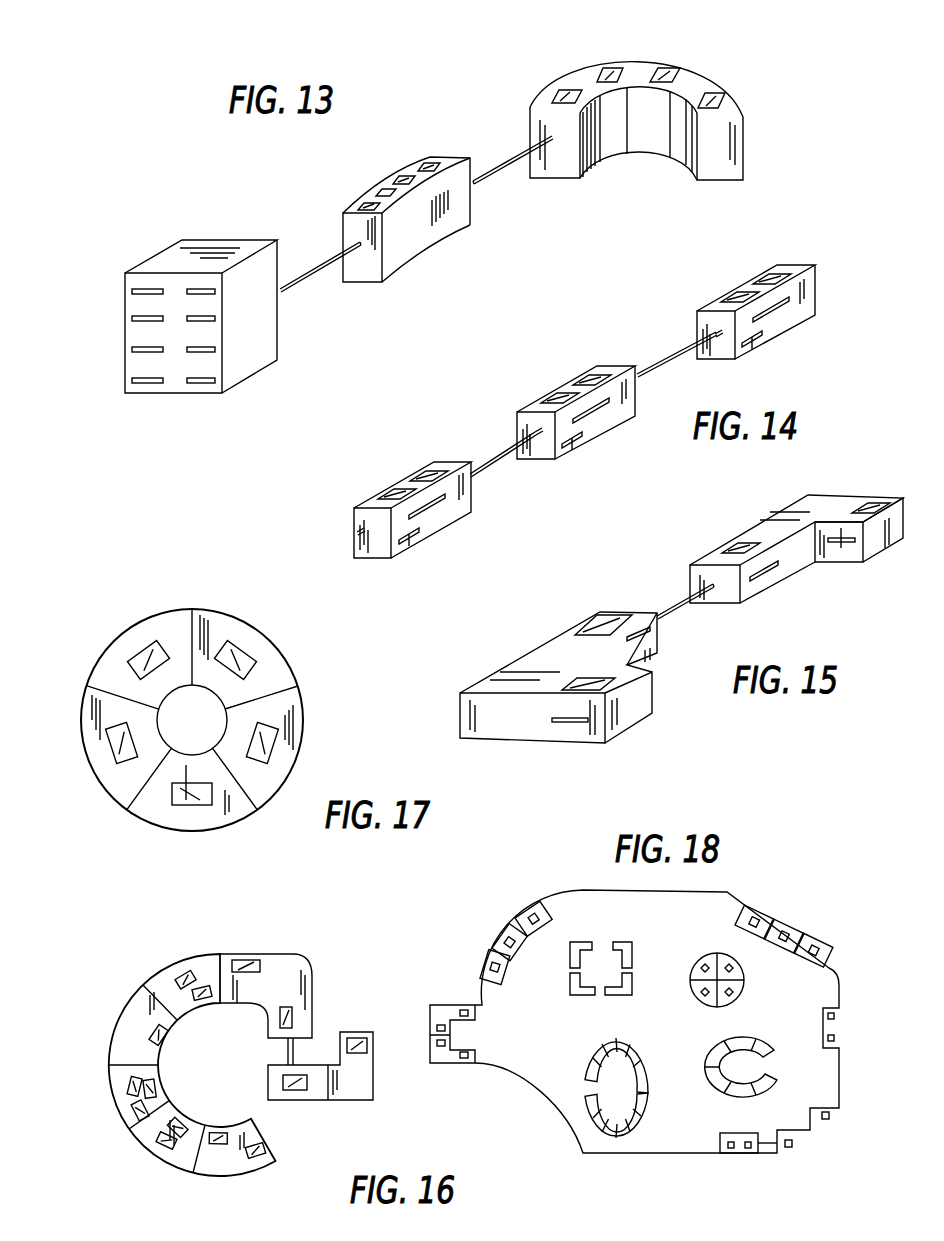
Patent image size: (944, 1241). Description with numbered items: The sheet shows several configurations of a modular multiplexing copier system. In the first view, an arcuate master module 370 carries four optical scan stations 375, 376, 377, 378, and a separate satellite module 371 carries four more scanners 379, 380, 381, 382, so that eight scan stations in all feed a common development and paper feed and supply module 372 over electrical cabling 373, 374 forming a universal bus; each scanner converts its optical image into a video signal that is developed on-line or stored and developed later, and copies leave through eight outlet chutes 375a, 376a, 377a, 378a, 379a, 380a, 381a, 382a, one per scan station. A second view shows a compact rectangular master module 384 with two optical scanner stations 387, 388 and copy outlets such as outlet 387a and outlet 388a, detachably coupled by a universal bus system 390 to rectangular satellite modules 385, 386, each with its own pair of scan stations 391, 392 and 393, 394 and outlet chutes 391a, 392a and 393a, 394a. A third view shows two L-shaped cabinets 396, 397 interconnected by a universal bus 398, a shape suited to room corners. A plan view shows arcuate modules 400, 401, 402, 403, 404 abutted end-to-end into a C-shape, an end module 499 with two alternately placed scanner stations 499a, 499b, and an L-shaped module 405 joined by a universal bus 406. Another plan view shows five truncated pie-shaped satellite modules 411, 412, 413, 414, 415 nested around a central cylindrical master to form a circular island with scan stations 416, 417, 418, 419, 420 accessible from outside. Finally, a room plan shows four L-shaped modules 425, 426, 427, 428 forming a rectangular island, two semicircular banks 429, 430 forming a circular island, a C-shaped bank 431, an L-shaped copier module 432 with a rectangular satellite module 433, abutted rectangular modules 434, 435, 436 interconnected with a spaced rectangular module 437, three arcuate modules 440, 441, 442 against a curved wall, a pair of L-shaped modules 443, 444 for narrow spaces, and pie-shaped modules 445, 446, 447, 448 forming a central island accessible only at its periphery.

In FIG. 13, the master module 370 is at (652, 135).
In FIG. 13, the satellite module 371 is at (368, 177).
In FIG. 13, the common development and paper feed and supply module 372 is at (207, 262).
In FIG. 13, the electrical cabling 373 is at (515, 157).
In FIG. 13, the electrical cabling 374 is at (310, 282).
In FIG. 13, the optical scan station 375 is at (562, 95).
In FIG. 13, the optical scan station 376 is at (612, 76).
In FIG. 13, the optical scan station 377 is at (672, 77).
In FIG. 13, the optical scan station 378 is at (716, 100).
In FIG. 13, the scanner 379 is at (437, 177).
In FIG. 13, the scanner 380 is at (406, 177).
In FIG. 13, the scanner 381 is at (388, 195).
In FIG. 13, the scanner 382 is at (365, 203).
In FIG. 13, the outlet chute 375a is at (130, 381).
In FIG. 13, the outlet chute 376a is at (130, 352).
In FIG. 13, the outlet chute 377a is at (130, 320).
In FIG. 13, the outlet chute 378a is at (136, 290).
In FIG. 13, the outlet chute 379a is at (218, 381).
In FIG. 13, the outlet chute 380a is at (218, 352).
In FIG. 13, the outlet chute 381a is at (247, 318).
In FIG. 13, the outlet chute 382a is at (215, 292).
In FIG. 14, the master module 384 is at (600, 424).
In FIG. 14, the satellite module 385 is at (357, 533).
In FIG. 14, the satellite module 386 is at (828, 288).
In FIG. 14, the optical scanner station 387 is at (599, 372).
In FIG. 14, the optical scanner station 388 is at (557, 391).
In FIG. 14, the copy delivery outlet 387a is at (629, 399).
In FIG. 14, the slot 388a is at (575, 434).
In FIG. 14, the universal bus system 390 is at (505, 447).
In FIG. 14, the recess 391 is at (424, 475).
In FIG. 14, the recess 392 is at (387, 495).
In FIG. 14, the slot 391a is at (451, 505).
In FIG. 14, the slot 392a is at (422, 517).
In FIG. 14, the recess 393 is at (745, 300).
In FIG. 14, the recess 394 is at (789, 272).
In FIG. 14, the slot 393a is at (752, 330).
In FIG. 14, the slot 394a is at (796, 317).
In FIG. 15, the L-shaped cabinet 396 is at (757, 601).
In FIG. 15, the L-shaped cabinet 397 is at (645, 700).
In FIG. 15, the universal bus 398 is at (675, 601).
In FIG. 17, the satellite module 411 is at (275, 661).
In FIG. 17, the satellite module 412 is at (283, 768).
In FIG. 17, the satellite module 413 is at (197, 801).
In FIG. 17, the satellite module 414 is at (125, 801).
In FIG. 17, the satellite module 415 is at (112, 661).
In FIG. 17, the optical scan station 416 is at (238, 651).
In FIG. 17, the optical scan station 417 is at (273, 731).
In FIG. 17, the optical scan station 418 is at (233, 814).
In FIG. 17, the optical scan station 419 is at (117, 756).
In FIG. 17, the optical scan station 420 is at (158, 641).
In FIG. 16, the arcuately shaped module 400 is at (203, 962).
In FIG. 16, the arcuately shaped module 401 is at (143, 1018).
In FIG. 16, the arcuately shaped module 402 is at (132, 1081).
In FIG. 16, the arcuately shaped module 403 is at (153, 1138).
In FIG. 16, the arcuately shaped module 404 is at (266, 1175).
In FIG. 16, the additional module of L-shaped configuration 405 is at (335, 1091).
In FIG. 16, the universal bus 406 is at (287, 1049).
In FIG. 16, the end block 499 is at (297, 974).
In FIG. 16, the recess 499a is at (292, 1019).
In FIG. 16, the recess 499b is at (247, 967).
In FIG. 18, the L-shaped module 425 is at (625, 945).
In FIG. 18, the L-shaped module 426 is at (583, 942).
In FIG. 18, the L-shaped module 427 is at (567, 988).
In FIG. 18, the L-shaped module 428 is at (617, 991).
In FIG. 18, the semicircular bank of modules 429 is at (633, 1131).
In FIG. 18, the semicircular bank of modules 430 is at (622, 1039).
In FIG. 18, the C-shaped bank of interconnected modules 431 is at (777, 1089).
In FIG. 18, the L-shaped copier module 432 is at (839, 1143).
In FIG. 18, the satellite module 433 is at (738, 1153).
In FIG. 18, the rectangularly shaped module 434 is at (757, 923).
In FIG. 18, the rectangularly shaped module 435 is at (787, 951).
In FIG. 18, the rectangularly shaped module 436 is at (817, 971).
In FIG. 18, the rectangular module 437 is at (840, 1031).
In FIG. 18, the arcuately shaped module 440 is at (490, 963).
In FIG. 18, the arcuately shaped module 441 is at (508, 931).
In FIG. 18, the arcuately shaped module 442 is at (527, 906).
In FIG. 18, the L-shaped module 443 is at (445, 1012).
In FIG. 18, the L-shaped module 444 is at (447, 1064).
In FIG. 18, the pie shaped module 445 is at (702, 959).
In FIG. 18, the pie shaped module 446 is at (740, 971).
In FIG. 18, the pie shaped module 447 is at (727, 1001).
In FIG. 18, the pie shaped module 448 is at (707, 1001).